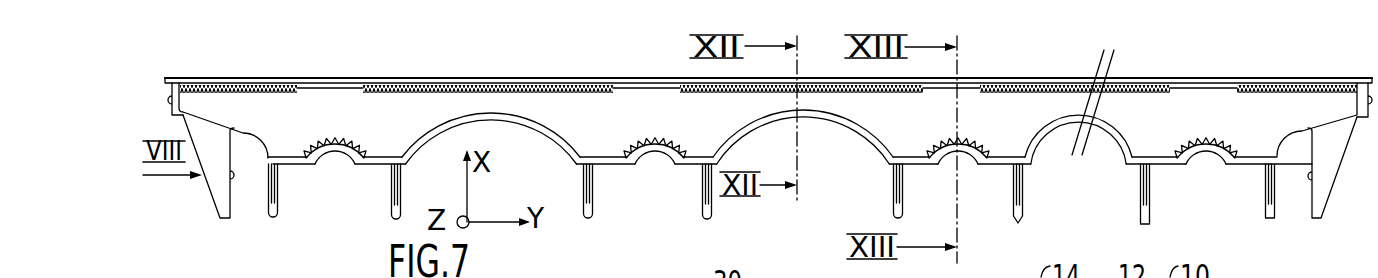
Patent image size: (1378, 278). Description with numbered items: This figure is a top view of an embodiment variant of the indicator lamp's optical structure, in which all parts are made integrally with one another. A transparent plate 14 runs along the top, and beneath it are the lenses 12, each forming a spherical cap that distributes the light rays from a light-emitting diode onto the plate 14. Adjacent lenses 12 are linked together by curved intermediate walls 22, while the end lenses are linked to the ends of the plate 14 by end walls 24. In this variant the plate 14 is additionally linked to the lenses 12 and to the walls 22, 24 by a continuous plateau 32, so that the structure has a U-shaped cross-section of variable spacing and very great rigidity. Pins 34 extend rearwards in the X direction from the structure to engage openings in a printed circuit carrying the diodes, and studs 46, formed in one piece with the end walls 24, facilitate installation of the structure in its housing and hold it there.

The transparent plate 14 is at (645, 77).
The continuous plateau 32 is at (372, 124).
The end wall 24 is at (245, 133).
The stud 46 is at (216, 170).
The intermediate wall 22 is at (512, 119).
The lens 12 is at (334, 152).
The pin 34 is at (268, 199).